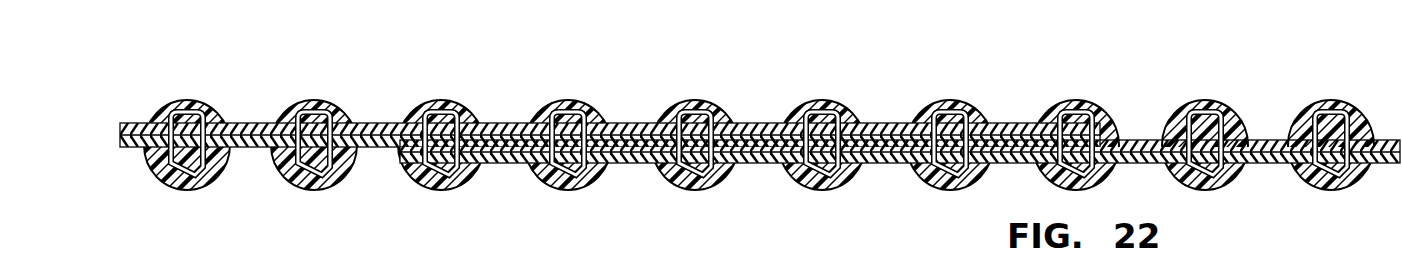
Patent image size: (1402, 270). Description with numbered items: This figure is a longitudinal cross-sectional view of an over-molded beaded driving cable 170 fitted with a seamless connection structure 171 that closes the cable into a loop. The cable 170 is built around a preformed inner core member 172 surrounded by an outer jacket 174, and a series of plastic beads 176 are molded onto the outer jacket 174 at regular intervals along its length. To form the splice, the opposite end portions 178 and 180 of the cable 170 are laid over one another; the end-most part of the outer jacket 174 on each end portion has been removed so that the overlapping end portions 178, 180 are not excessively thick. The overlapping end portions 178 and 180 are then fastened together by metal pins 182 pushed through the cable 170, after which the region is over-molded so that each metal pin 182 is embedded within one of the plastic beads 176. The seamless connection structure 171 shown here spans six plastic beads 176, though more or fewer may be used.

The over-molded beaded driving cable 170 is at (736, 139).
The seamless connection structure 171 is at (738, 97).
The preformed inner core member 172 is at (263, 147).
The outer jacket 174 is at (238, 122).
The plastic beads 176 is at (170, 104).
The end portion 178 is at (610, 131).
The end portion 180 is at (884, 163).
The metal pins 182 is at (843, 110).